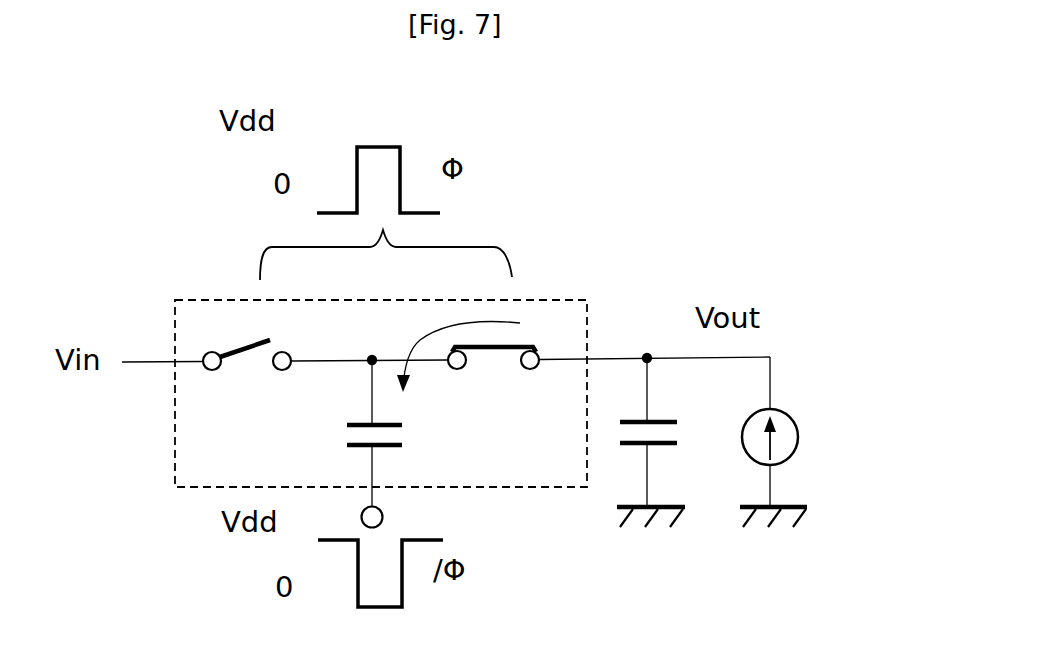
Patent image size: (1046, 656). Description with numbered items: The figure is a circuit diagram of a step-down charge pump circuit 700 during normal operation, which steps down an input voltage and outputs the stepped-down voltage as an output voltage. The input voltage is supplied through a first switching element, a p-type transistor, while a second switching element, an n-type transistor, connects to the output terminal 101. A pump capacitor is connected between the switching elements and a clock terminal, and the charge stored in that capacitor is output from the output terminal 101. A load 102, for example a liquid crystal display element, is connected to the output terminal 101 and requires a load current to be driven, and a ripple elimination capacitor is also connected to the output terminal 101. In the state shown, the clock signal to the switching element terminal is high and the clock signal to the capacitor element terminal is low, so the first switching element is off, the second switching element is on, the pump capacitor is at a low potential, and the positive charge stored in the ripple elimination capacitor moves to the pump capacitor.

The charge pump circuit 700 is at (203, 298).
The output terminal 101 is at (647, 354).
The load 102 is at (785, 412).